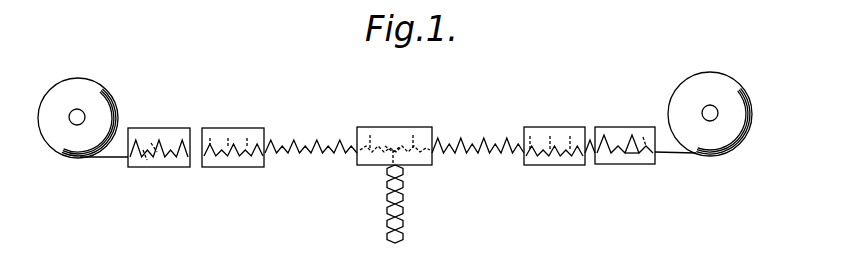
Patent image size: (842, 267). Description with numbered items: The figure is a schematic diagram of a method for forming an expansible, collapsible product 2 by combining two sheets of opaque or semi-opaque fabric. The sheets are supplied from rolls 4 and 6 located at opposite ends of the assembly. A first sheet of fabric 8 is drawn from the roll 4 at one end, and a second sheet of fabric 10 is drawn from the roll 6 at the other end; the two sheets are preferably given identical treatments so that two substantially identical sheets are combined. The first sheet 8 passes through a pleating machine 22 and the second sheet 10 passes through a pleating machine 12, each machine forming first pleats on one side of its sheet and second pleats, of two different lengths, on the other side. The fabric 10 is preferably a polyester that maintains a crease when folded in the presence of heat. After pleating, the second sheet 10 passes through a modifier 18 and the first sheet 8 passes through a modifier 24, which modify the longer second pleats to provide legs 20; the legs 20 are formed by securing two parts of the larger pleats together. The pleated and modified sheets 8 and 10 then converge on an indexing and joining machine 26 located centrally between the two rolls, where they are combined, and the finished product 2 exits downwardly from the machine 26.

The expansible, collapsible product 2 is at (411, 214).
The roll 4 is at (97, 102).
The roll 6 is at (730, 84).
The first sheet of fabric 8 is at (111, 158).
The second sheet of fabric 10 is at (680, 153).
The pleating machine 12 is at (607, 126).
The modifier 18 is at (540, 127).
The legs 20 is at (311, 142).
The pleating machine 22 is at (177, 167).
The modifier 24 is at (233, 128).
The indexing and joining machine 26 is at (397, 127).